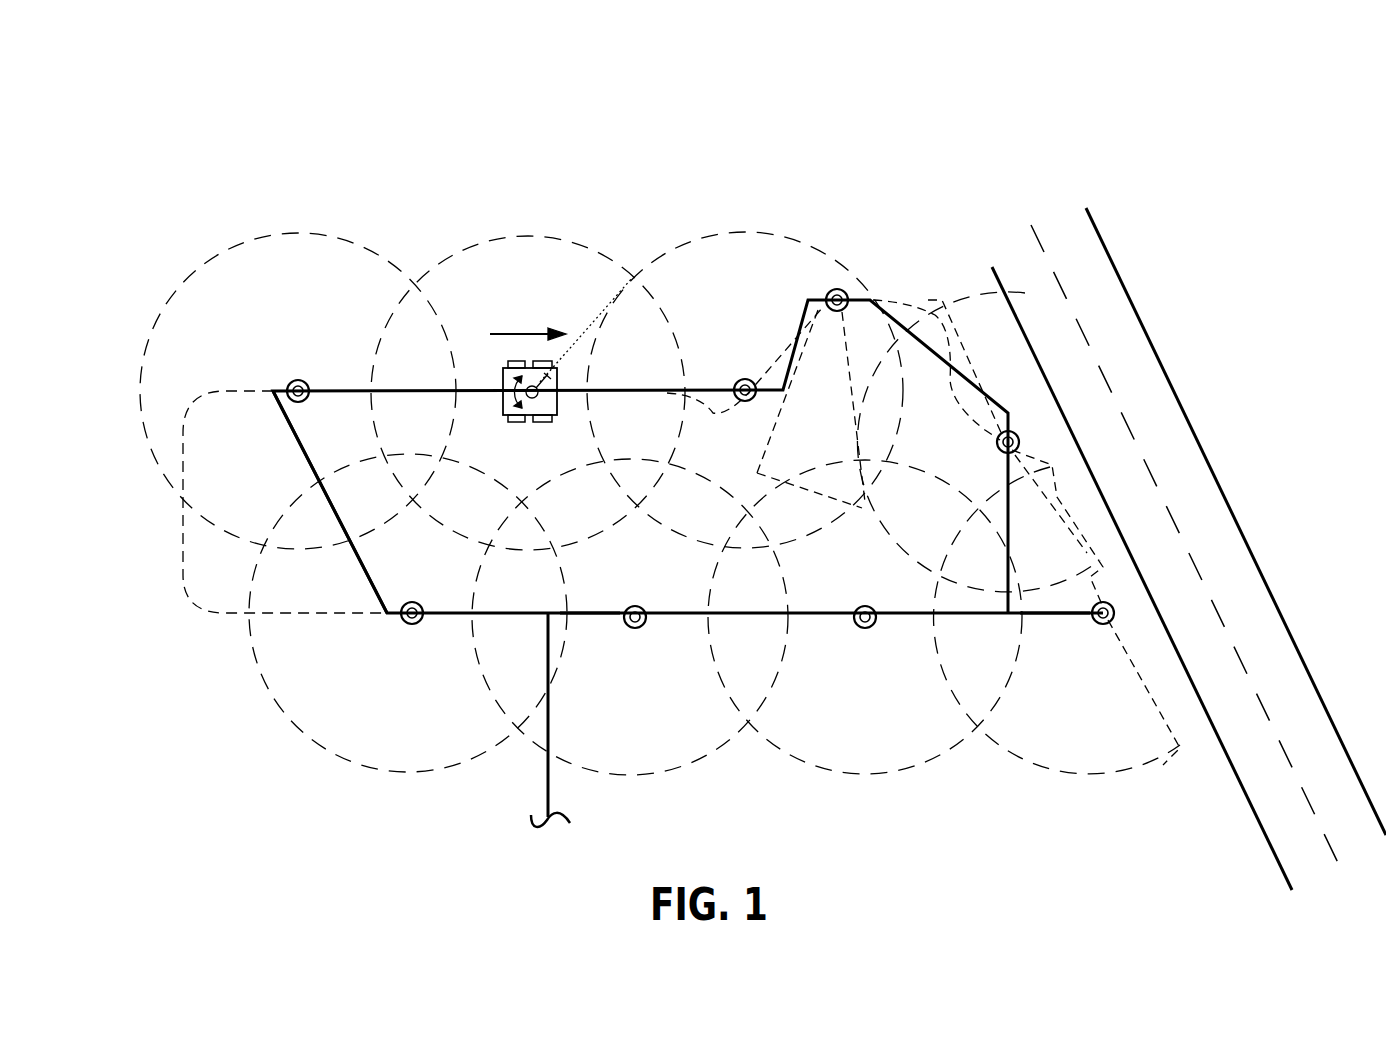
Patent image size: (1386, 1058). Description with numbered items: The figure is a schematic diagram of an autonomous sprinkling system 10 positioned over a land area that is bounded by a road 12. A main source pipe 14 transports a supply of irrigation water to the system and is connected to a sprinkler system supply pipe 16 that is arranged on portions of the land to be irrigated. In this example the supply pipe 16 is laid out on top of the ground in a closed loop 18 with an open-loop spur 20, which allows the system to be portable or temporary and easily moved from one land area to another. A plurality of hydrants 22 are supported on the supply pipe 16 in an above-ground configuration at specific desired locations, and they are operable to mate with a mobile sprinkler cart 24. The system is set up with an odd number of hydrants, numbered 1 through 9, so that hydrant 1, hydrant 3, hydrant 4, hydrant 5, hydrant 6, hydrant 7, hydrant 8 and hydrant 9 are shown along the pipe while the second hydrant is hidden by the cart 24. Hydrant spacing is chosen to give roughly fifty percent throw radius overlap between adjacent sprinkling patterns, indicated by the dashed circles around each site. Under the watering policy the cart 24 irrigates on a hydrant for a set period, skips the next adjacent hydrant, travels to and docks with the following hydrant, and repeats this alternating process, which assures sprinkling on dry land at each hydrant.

The hydrant number one 1 is at (298, 379).
The hydrant number three 3 is at (745, 378).
The hydrant number four 4 is at (837, 288).
The hydrant number five 5 is at (1018, 436).
The hydrant number six 6 is at (1097, 621).
The hydrant number seven 7 is at (857, 630).
The hydrant number eight 8 is at (640, 629).
The hydrant number nine 9 is at (410, 625).
The autonomous sprinkling system 10 is at (667, 168).
The road 12 is at (1223, 558).
The main source pipe 14 is at (548, 776).
The sprinkler system supply pipe 16 is at (591, 620).
The closed loop 18 is at (303, 468).
The open-loop spur 20 is at (1036, 618).
The hydrants 22 is at (635, 606).
The mobile sprinkler cart 24 is at (524, 425).